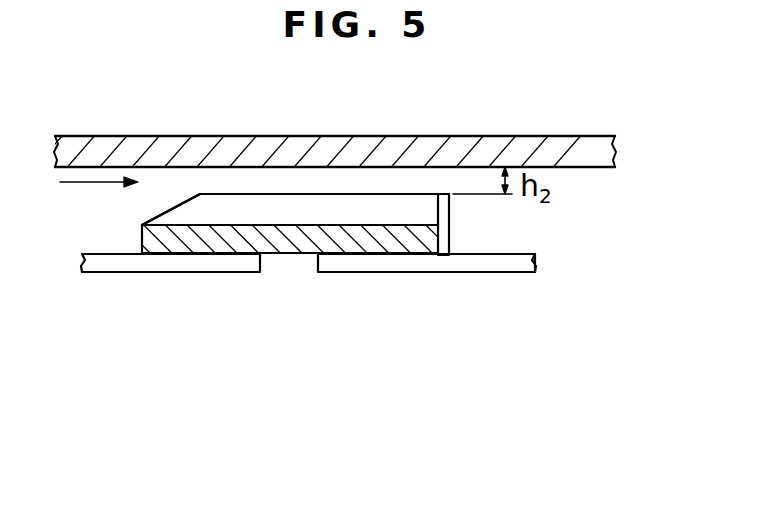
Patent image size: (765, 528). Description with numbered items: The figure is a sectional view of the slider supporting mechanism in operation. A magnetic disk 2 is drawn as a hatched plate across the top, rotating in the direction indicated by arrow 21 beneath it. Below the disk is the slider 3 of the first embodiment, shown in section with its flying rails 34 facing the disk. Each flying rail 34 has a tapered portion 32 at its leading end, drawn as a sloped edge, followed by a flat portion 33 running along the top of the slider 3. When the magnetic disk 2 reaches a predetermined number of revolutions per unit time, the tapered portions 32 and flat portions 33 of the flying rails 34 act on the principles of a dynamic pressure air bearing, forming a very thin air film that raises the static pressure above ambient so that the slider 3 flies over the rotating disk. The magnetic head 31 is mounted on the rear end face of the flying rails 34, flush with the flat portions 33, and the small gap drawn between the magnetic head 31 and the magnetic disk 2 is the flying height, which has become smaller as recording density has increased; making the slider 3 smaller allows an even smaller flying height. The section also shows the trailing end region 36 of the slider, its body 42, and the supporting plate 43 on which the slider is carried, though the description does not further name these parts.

The magnetic disk 2 is at (582, 150).
The arrow 21 is at (84, 183).
The slider 3 is at (132, 231).
The magnetic head 31 is at (443, 194).
The tapered portion 32 is at (177, 204).
The flat portion 33 is at (320, 194).
The flying rail 34 is at (384, 188).
The slider trailing end 36 is at (443, 255).
The slider body 42 is at (294, 250).
The suspension / mounting plate 43 is at (202, 262).